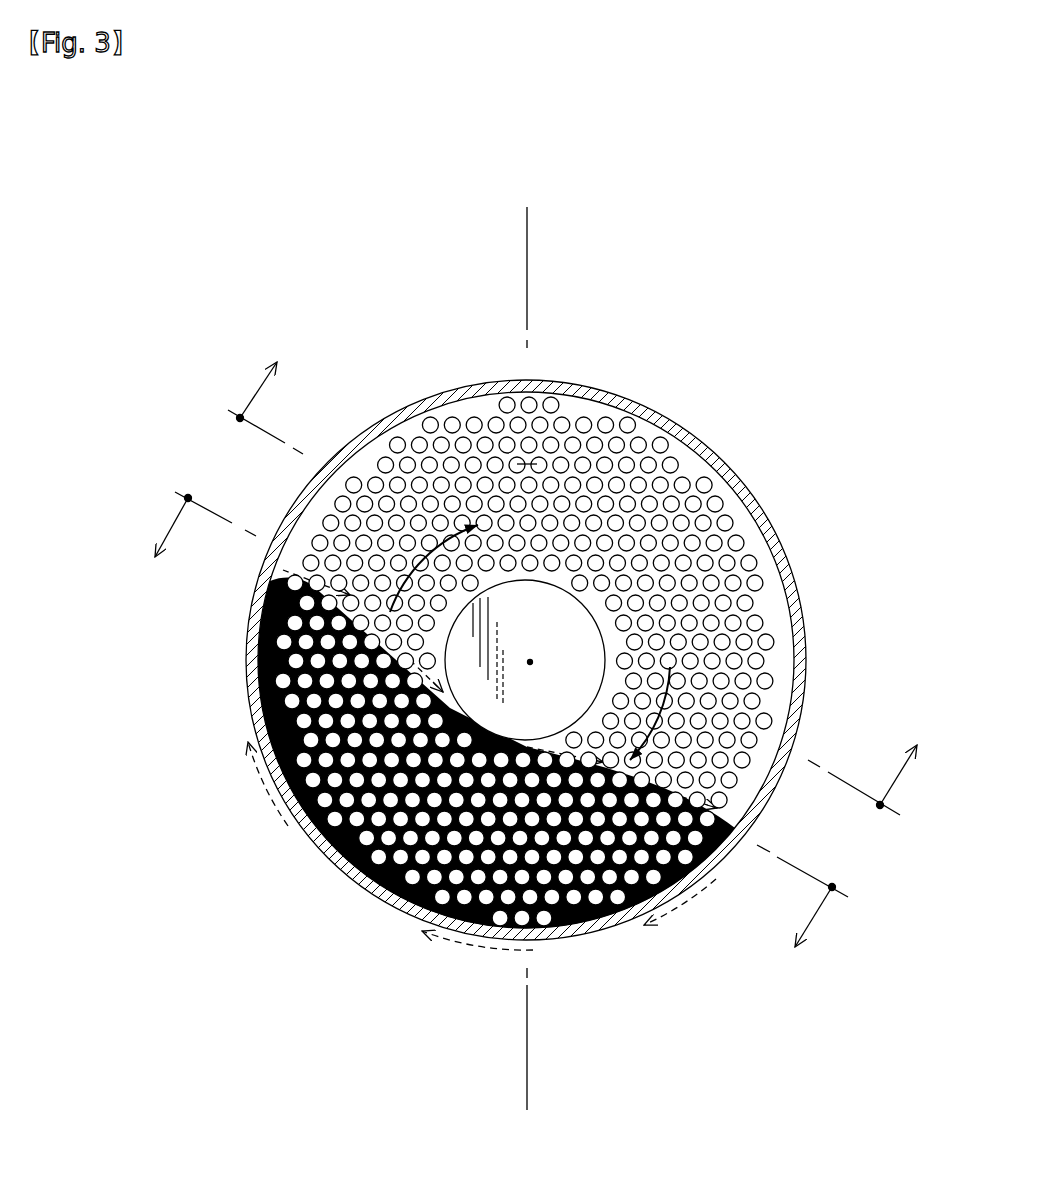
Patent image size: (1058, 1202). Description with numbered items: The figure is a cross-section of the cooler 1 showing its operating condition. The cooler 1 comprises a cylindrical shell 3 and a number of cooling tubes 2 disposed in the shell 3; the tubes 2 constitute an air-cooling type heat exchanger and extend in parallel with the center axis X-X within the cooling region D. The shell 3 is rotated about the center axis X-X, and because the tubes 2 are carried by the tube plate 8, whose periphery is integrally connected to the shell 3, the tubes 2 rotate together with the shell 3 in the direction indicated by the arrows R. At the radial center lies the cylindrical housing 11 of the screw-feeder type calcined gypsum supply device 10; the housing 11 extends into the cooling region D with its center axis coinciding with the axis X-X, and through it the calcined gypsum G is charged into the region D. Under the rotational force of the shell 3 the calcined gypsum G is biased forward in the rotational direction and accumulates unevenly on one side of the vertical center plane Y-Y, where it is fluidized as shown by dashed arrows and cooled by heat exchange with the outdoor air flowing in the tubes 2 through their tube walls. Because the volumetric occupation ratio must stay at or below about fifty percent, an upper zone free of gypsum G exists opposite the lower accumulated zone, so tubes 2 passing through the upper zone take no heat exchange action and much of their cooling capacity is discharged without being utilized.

The cooler 1 is at (500, 585).
The cooling tubes 2 is at (684, 477).
The cylindrical shell 3 is at (428, 403).
The tube plate 8 is at (777, 615).
The calcined gypsum supply device 10 is at (583, 601).
The cylindrical housing 11 is at (545, 612).
The calcined gypsum G is at (245, 716).
The center axis X is at (530, 662).
The vertical center plane Y is at (527, 661).
The cooling region D is at (527, 450).
The rotational direction arrows R is at (533, 633).